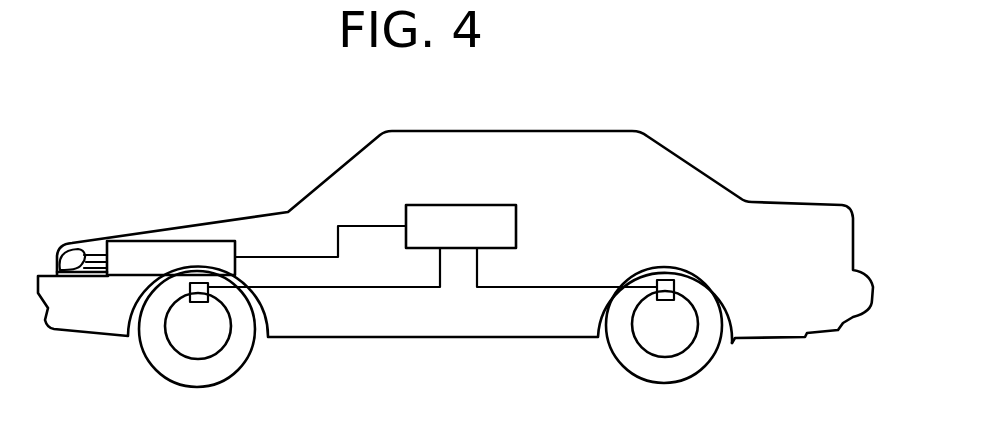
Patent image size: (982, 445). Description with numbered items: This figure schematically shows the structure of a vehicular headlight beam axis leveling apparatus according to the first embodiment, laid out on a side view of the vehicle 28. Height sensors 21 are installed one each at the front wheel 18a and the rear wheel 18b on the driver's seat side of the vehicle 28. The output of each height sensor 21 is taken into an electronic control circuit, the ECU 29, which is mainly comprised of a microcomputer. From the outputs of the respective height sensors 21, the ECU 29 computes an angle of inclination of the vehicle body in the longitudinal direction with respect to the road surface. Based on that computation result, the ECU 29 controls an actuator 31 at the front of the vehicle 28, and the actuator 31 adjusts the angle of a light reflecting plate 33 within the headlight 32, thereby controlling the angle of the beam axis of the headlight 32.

The vehicle 28 is at (606, 131).
The electronic control circuit (ECU) 29 is at (455, 205).
The actuator 31 is at (203, 240).
The headlight 32 is at (55, 260).
The light reflecting plate 33 is at (80, 252).
The height sensor 21 is at (196, 304).
The front wheel 18a is at (245, 342).
The rear wheel 18b is at (707, 347).